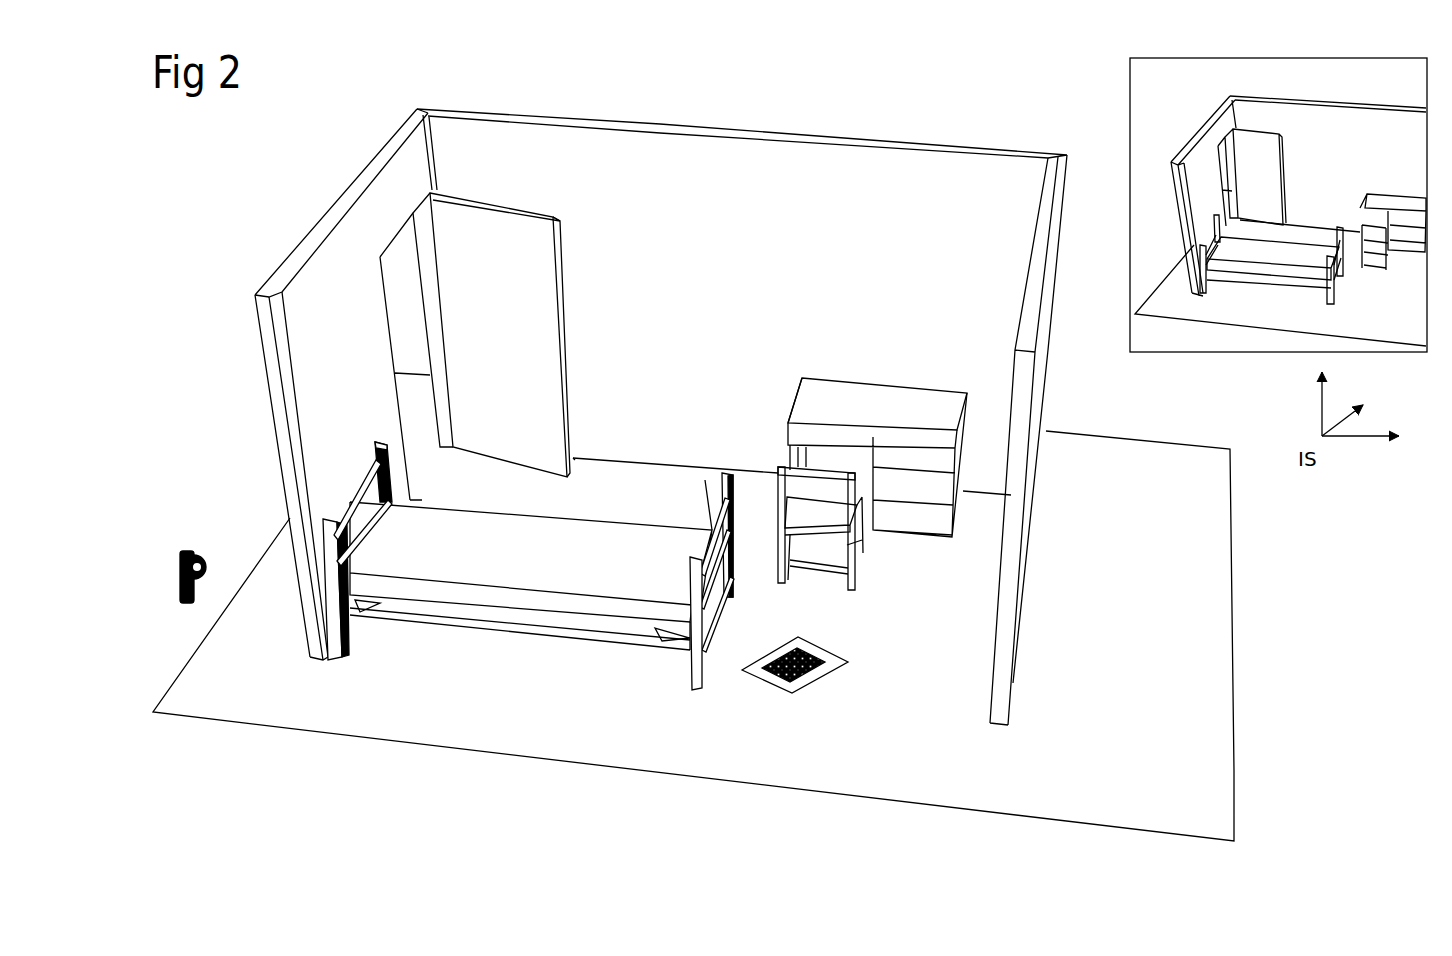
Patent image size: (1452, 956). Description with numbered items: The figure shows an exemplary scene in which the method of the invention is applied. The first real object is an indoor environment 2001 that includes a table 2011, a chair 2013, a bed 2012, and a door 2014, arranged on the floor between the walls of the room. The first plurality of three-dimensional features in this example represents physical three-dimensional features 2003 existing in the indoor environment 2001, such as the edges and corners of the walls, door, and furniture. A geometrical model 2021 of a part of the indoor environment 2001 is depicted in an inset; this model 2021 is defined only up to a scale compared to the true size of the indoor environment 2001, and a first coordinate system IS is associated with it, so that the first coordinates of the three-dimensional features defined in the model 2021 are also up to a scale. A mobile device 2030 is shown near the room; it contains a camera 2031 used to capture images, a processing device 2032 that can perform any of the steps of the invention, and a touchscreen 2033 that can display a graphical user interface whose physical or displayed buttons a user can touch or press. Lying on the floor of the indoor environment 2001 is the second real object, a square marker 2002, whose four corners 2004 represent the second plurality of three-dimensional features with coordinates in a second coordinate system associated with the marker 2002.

The indoor environment 2001 is at (238, 443).
The square marker 2002 is at (817, 702).
The physical 3D features 2003 is at (575, 458).
The four corners 2004 is at (805, 632).
The table 2011 is at (860, 388).
The bed 2012 is at (460, 638).
The chair 2013 is at (878, 545).
The door 2014 is at (488, 438).
The geometrical model 2021 is at (1144, 95).
The mobile device 2030 is at (198, 657).
The camera 2031 is at (205, 588).
The processing device 2032 is at (175, 588).
The touchscreen 2033 is at (172, 567).